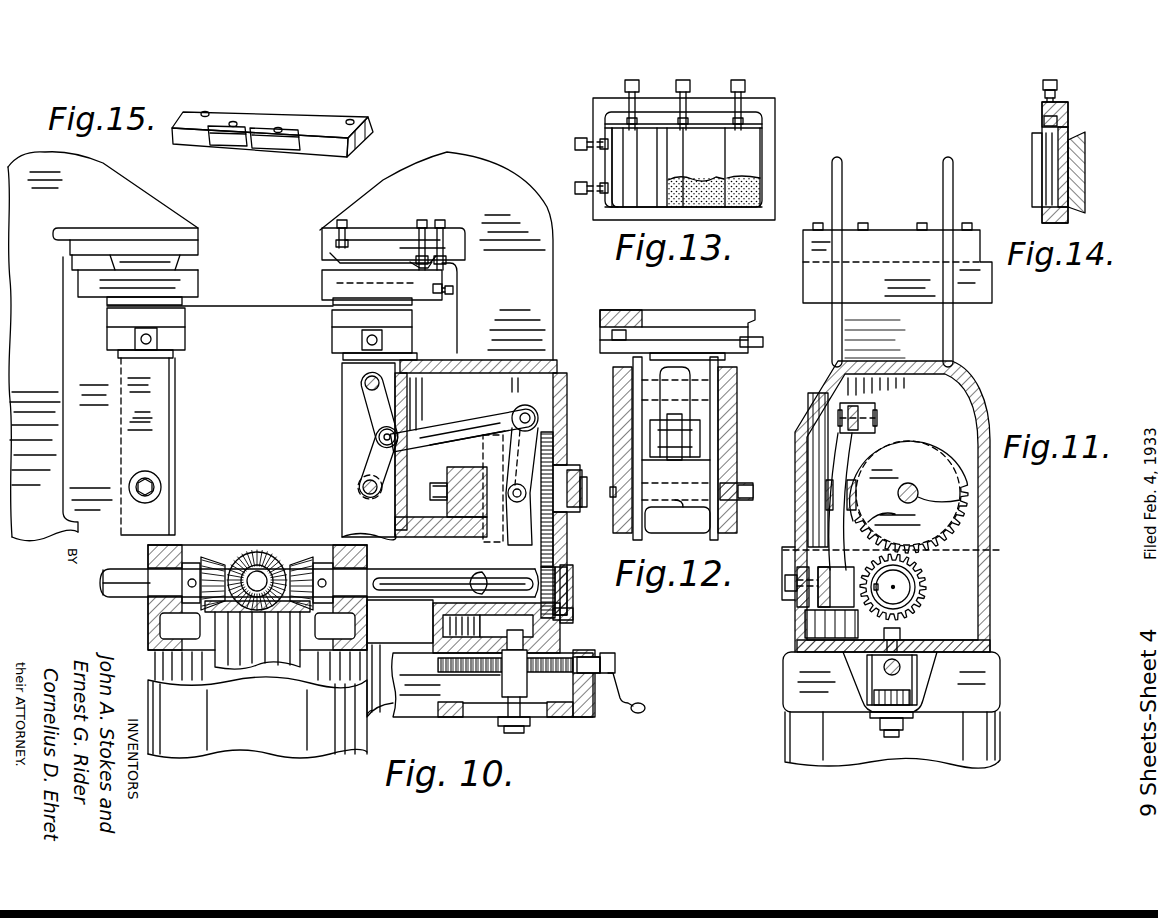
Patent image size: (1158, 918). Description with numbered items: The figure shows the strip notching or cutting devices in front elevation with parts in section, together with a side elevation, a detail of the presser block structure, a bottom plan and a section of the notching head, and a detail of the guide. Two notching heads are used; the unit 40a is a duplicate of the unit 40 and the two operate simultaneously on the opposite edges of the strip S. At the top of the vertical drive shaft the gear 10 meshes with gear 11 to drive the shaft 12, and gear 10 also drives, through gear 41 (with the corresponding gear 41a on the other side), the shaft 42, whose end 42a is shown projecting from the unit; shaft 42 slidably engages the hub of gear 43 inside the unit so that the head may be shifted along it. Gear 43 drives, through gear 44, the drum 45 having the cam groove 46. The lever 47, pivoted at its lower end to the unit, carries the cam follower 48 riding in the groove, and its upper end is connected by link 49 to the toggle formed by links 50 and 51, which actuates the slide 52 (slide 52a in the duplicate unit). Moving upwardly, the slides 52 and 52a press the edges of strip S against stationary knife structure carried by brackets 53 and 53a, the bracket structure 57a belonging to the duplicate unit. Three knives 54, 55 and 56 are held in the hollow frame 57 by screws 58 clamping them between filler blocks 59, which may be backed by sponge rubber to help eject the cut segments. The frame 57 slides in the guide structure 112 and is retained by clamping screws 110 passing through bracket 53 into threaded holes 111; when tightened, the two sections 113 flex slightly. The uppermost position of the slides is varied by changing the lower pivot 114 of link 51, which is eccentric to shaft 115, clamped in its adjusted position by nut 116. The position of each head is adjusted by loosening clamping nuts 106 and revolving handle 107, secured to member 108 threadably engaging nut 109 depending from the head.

In FIG. 10, the gear 10 is at (270, 617).
In FIG. 10, the gear 11 is at (265, 556).
In FIG. 10, the shaft 12 is at (250, 576).
In FIG. 11, the unit 40 is at (880, 250).
In FIG. 10, the unit 40 is at (452, 160).
In FIG. 10, the unit 40a is at (163, 208).
In FIG. 10, the gear 41 is at (302, 560).
In FIG. 10, the bevel gear 41a is at (215, 562).
In FIG. 11, the shaft 42 is at (900, 593).
In FIG. 10, the shaft 42 is at (383, 600).
In FIG. 10, the shaft end 42a is at (125, 597).
In FIG. 11, the gear 43 is at (923, 577).
In FIG. 10, the gear 43 is at (560, 583).
In FIG. 11, the gear 44 is at (957, 535).
In FIG. 10, the gear 44 is at (540, 440).
In FIG. 11, the drum 45 is at (917, 437).
In FIG. 10, the drum 45 is at (483, 531).
In FIG. 10, the cam groove 46 is at (490, 457).
In FIG. 12, the lever 47 is at (673, 448).
In FIG. 11, the lever 47 is at (838, 520).
In FIG. 10, the lever 47 is at (515, 438).
In FIG. 10, the cam follower 48 is at (523, 502).
In FIG. 12, the link 49 is at (670, 458).
In FIG. 11, the link 49 is at (876, 407).
In FIG. 10, the link 49 is at (437, 418).
In FIG. 12, the toggle link 50 is at (685, 408).
In FIG. 10, the toggle link 50 is at (370, 397).
In FIG. 12, the toggle link 51 is at (693, 465).
In FIG. 10, the toggle link 51 is at (370, 465).
In FIG. 12, the slide 52 is at (608, 352).
In FIG. 10, the slide 52 is at (337, 343).
In FIG. 10, the slide 52a is at (177, 343).
In FIG. 10, the bracket 53 is at (325, 237).
In FIG. 10, the bracket 53a is at (195, 249).
In FIG. 13, the knife 54 is at (668, 166).
In FIG. 13, the knife 55 is at (758, 162).
In FIG. 14, the knife 55 is at (1035, 155).
In FIG. 13, the knife 56 is at (737, 207).
In FIG. 10, the knife 56 is at (182, 298).
In FIG. 13, the hollow frame 57 is at (768, 108).
In FIG. 14, the hollow frame 57 is at (1045, 214).
In FIG. 10, the hollow frame 57 is at (320, 280).
In FIG. 10, the frame 57a is at (190, 278).
In FIG. 13, the screw 58 is at (576, 141).
In FIG. 10, the screw 58 is at (447, 300).
In FIG. 13, the filler block 59 is at (630, 197).
In FIG. 11, the clamping nut 106 is at (905, 728).
In FIG. 10, the clamping nut 106 is at (530, 727).
In FIG. 10, the handle 107 is at (646, 703).
In FIG. 11, the threaded member 108 is at (890, 674).
In FIG. 10, the threaded member 108 is at (565, 658).
In FIG. 11, the nut 109 is at (903, 675).
In FIG. 10, the nut 109 is at (505, 686).
In FIG. 10, the clamping screw 110 is at (422, 224).
In FIG. 15, the threaded hole 111 is at (236, 122).
In FIG. 15, the guide structure 112 is at (318, 148).
In FIG. 10, the guide structure 112 is at (410, 266).
In FIG. 15, the section 113 is at (227, 138).
In FIG. 10, the lower pivot 114 is at (365, 487).
In FIG. 12, the shaft 115 is at (682, 495).
In FIG. 12, the nut 116 is at (743, 483).
In FIG. 10, the strip S is at (256, 308).